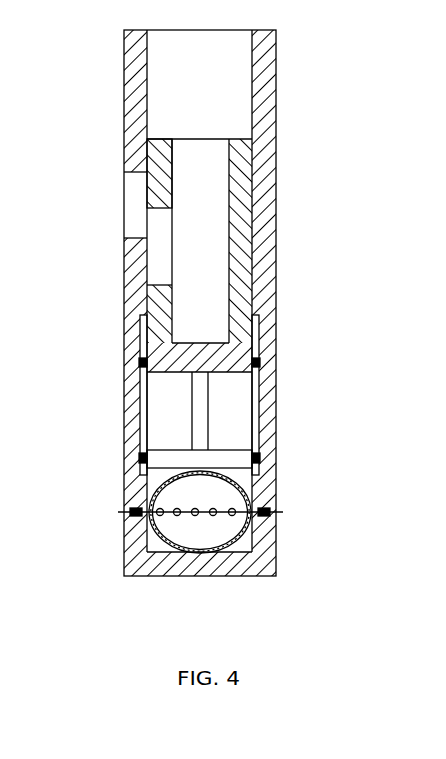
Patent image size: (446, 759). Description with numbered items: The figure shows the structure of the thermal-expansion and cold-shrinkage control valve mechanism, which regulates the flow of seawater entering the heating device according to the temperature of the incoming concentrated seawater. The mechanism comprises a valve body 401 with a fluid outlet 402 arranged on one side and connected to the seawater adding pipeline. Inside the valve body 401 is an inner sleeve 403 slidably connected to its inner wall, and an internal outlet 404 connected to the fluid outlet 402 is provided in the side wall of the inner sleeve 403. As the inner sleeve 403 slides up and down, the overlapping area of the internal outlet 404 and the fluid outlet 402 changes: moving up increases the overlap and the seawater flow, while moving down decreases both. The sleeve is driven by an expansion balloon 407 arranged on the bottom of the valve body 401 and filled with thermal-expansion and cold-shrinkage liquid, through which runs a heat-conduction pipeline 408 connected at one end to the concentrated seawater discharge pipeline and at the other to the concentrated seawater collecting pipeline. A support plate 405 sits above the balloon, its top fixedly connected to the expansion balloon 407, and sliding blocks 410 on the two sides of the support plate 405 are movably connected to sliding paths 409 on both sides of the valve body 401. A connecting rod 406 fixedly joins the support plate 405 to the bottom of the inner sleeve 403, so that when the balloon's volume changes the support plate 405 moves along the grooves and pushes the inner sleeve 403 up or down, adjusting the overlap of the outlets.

The valve body 401 is at (275, 298).
The fluid outlet 402 is at (132, 230).
The inner sleeve 403 is at (241, 264).
The internal outlet 404 is at (158, 222).
The support plate 405 is at (238, 458).
The connecting rod 406 is at (193, 437).
The expansion balloon 407 is at (158, 540).
The heat-conduction pipeline 408 is at (195, 512).
The sliding paths 409 is at (255, 415).
The sliding blocks 410 is at (141, 458).